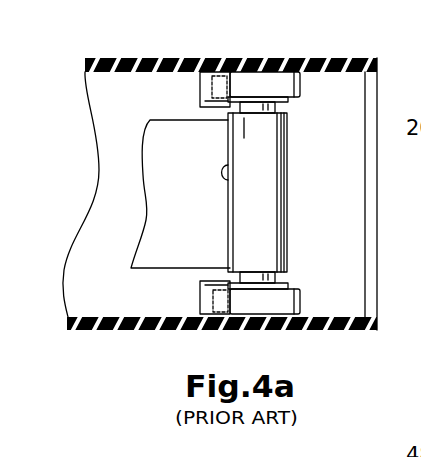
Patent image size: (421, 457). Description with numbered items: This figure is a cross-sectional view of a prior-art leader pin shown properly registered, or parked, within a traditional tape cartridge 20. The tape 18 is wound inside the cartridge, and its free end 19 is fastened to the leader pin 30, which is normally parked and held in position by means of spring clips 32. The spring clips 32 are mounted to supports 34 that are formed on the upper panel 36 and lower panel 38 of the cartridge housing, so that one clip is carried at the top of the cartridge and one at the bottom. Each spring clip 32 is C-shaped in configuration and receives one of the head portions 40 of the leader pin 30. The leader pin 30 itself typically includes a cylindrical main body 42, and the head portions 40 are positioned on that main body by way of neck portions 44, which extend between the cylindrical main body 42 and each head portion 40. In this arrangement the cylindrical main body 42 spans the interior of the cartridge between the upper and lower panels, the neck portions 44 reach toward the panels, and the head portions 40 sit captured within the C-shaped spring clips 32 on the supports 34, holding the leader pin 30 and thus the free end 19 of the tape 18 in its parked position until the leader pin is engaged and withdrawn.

The tape 18 is at (193, 213).
The free end 19 is at (228, 172).
The tape cartridge 20 is at (113, 100).
The leader pin 30 is at (267, 186).
The spring clips 32 is at (283, 85).
The supports 34 is at (203, 88).
The upper panel 36 is at (167, 58).
The lower panel 38 is at (118, 330).
The head portions 40 is at (270, 101).
The cylindrical main body 42 is at (289, 237).
The neck portions 44 is at (243, 109).